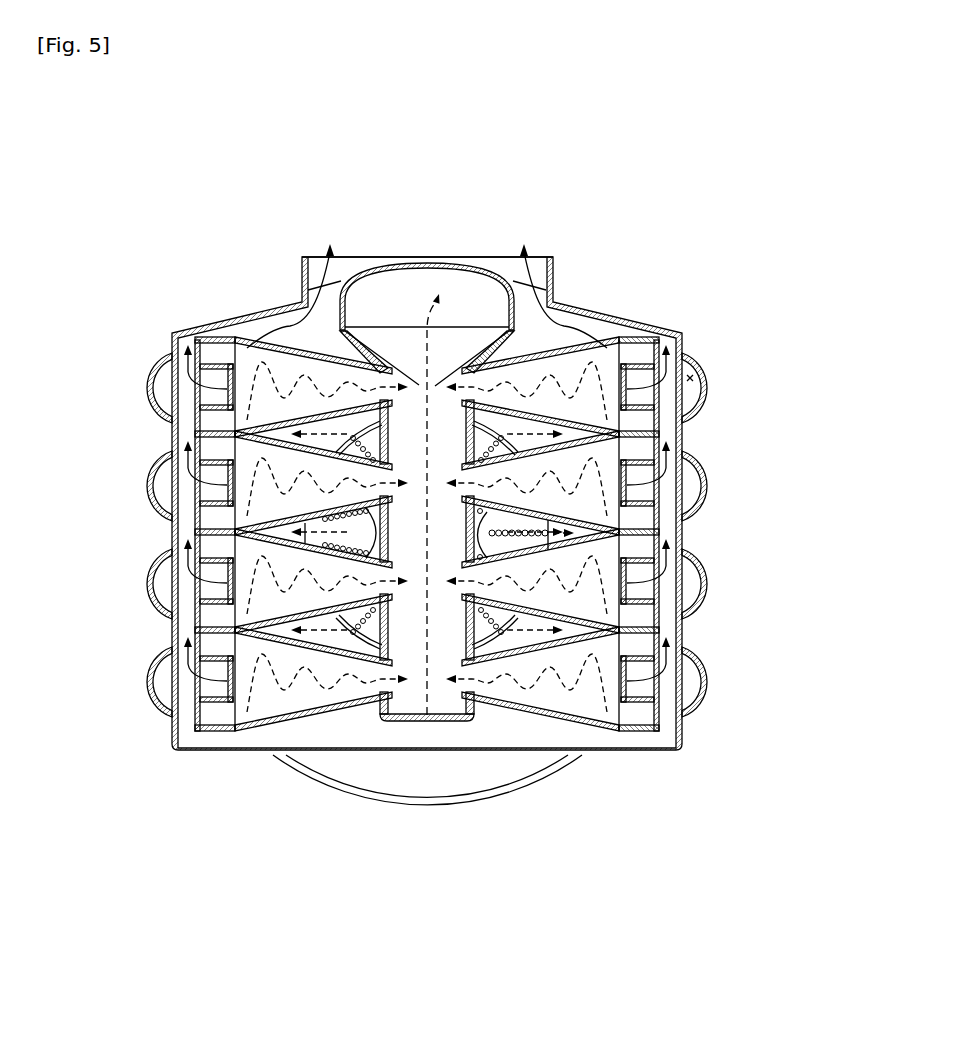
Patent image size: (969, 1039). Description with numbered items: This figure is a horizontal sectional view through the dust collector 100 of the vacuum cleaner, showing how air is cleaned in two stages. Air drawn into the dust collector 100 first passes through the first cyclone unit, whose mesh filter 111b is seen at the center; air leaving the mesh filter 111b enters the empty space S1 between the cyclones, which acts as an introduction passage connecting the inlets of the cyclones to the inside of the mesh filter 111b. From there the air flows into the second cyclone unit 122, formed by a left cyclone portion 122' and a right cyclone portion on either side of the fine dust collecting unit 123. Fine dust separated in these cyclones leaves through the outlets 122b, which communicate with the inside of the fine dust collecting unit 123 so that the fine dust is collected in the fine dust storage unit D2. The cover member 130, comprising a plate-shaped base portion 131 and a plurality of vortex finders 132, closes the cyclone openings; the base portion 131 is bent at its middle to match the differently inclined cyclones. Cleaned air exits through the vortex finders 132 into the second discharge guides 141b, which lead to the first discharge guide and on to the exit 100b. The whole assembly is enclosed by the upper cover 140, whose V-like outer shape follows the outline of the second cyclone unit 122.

The dust collector 100 is at (183, 208).
The exit 100b is at (538, 264).
The outlets 122b is at (418, 383).
The fine dust storage unit D2 is at (410, 290).
The second discharge guides 141b is at (693, 378).
The upper cover 140 is at (713, 394).
The empty space S1 is at (600, 425).
The mesh filter 111b is at (513, 520).
The base portion 131 is at (658, 643).
The vortex finders 132 is at (648, 700).
The cover member 130 is at (736, 535).
The fine dust collecting unit 123 is at (417, 625).
The left cyclone portion 122' is at (313, 602).
The second cyclone unit 122 is at (427, 624).